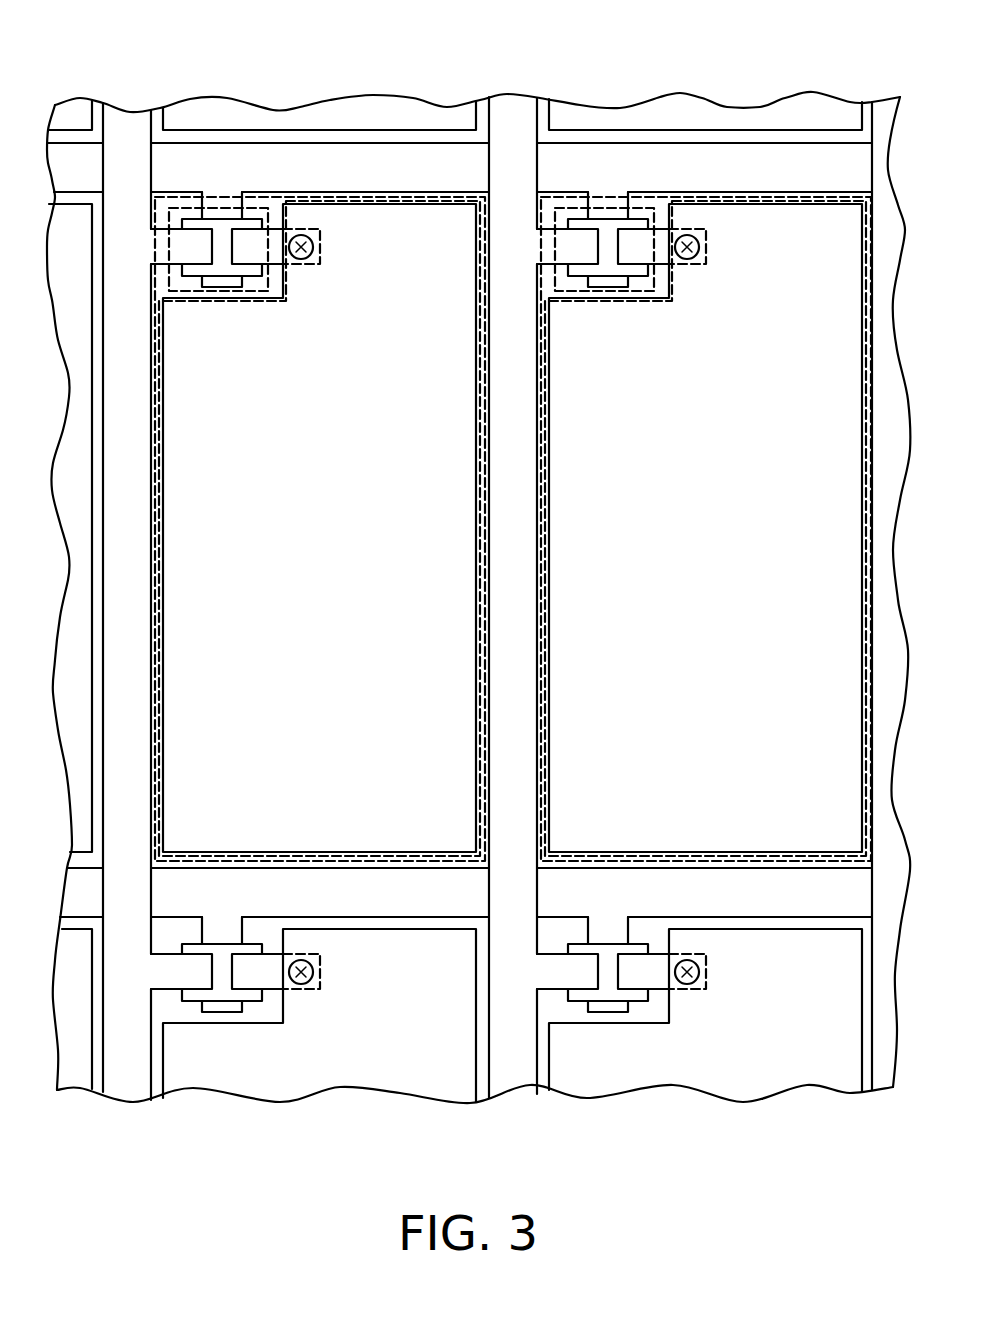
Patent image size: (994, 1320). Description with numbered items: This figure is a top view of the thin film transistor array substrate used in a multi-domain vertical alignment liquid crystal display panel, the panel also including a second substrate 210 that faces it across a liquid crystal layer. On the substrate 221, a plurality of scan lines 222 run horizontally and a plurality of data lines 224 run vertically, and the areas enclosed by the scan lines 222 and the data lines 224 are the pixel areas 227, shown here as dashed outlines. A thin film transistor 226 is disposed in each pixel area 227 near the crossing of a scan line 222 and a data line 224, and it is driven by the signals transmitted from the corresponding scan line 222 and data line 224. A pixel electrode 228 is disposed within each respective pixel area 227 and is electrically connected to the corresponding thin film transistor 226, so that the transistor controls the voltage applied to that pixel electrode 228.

The second substrate 210 is at (862, 1161).
The substrate 221 is at (702, 97).
The scan lines 222 is at (375, 163).
The data lines 224 is at (125, 130).
The thin film transistors 226 is at (185, 206).
The pixel areas 227 is at (436, 195).
The pixel electrodes 228 is at (338, 225).